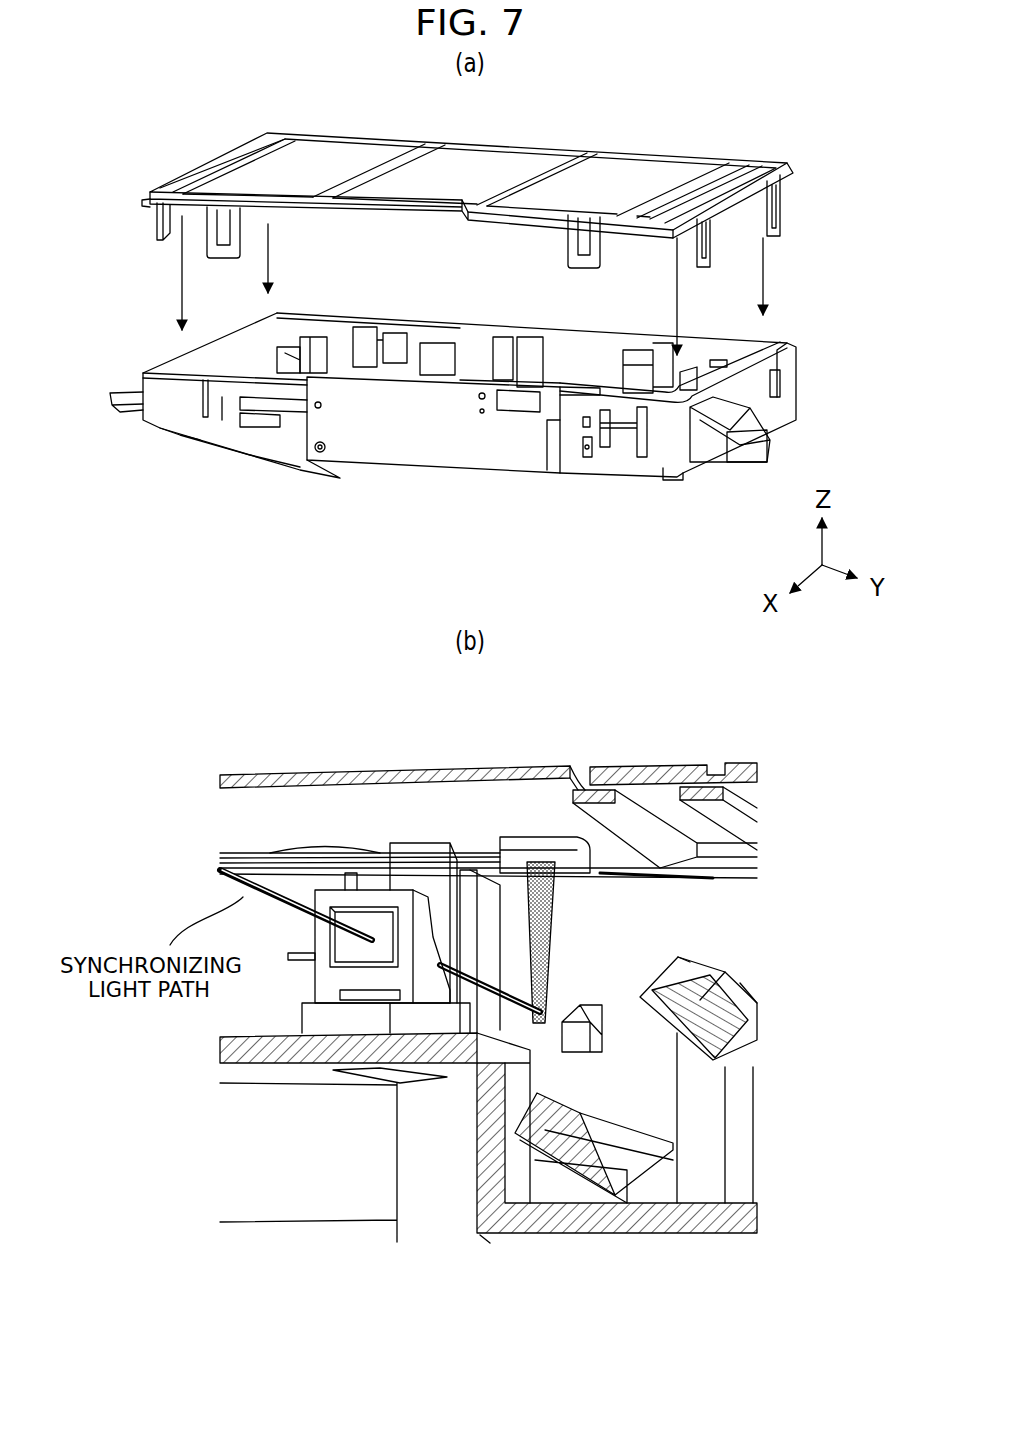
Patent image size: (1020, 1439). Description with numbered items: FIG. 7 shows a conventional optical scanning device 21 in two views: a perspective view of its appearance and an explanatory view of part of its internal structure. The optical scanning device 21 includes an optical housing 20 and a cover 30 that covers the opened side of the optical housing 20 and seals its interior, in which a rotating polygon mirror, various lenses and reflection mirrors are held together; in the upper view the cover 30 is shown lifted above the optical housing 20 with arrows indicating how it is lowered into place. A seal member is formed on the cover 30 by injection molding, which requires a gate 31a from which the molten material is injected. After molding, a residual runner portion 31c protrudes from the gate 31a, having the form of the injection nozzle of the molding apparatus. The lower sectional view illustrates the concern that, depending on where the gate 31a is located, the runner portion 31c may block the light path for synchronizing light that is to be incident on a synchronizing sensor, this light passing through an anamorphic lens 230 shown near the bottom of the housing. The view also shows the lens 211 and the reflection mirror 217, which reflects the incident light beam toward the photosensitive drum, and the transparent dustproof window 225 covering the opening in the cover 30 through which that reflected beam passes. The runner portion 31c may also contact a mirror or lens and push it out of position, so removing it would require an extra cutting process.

The optical scanning device 21 is at (712, 135).
The cover 30 is at (490, 165).
The optical housing 20 is at (682, 448).
The dustproof window 225 is at (638, 765).
The gate 31a is at (556, 832).
The runner portion 31c is at (545, 906).
The lens 211 is at (747, 1017).
The anamorphic lens 230 is at (362, 975).
The reflection mirror 217 is at (633, 1190).